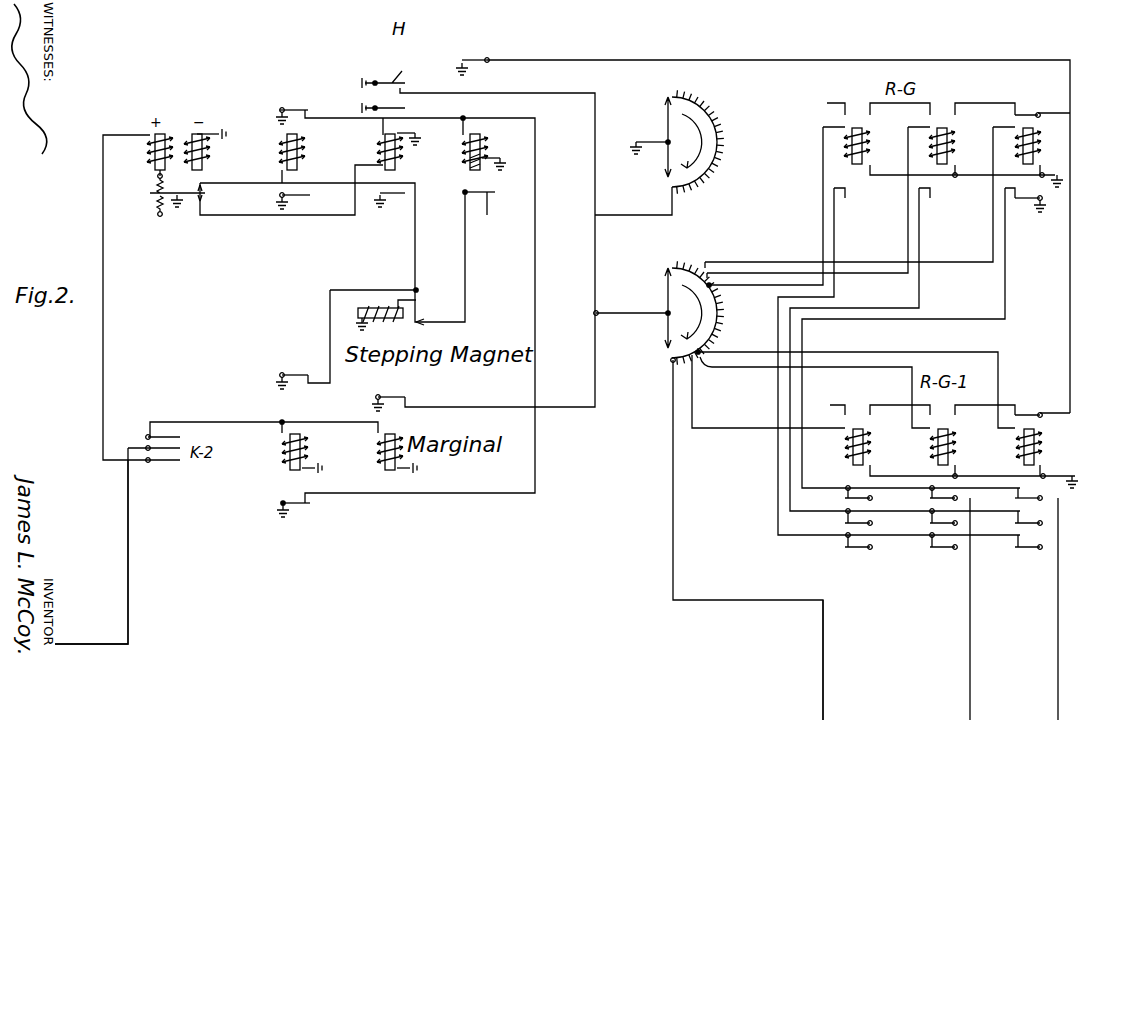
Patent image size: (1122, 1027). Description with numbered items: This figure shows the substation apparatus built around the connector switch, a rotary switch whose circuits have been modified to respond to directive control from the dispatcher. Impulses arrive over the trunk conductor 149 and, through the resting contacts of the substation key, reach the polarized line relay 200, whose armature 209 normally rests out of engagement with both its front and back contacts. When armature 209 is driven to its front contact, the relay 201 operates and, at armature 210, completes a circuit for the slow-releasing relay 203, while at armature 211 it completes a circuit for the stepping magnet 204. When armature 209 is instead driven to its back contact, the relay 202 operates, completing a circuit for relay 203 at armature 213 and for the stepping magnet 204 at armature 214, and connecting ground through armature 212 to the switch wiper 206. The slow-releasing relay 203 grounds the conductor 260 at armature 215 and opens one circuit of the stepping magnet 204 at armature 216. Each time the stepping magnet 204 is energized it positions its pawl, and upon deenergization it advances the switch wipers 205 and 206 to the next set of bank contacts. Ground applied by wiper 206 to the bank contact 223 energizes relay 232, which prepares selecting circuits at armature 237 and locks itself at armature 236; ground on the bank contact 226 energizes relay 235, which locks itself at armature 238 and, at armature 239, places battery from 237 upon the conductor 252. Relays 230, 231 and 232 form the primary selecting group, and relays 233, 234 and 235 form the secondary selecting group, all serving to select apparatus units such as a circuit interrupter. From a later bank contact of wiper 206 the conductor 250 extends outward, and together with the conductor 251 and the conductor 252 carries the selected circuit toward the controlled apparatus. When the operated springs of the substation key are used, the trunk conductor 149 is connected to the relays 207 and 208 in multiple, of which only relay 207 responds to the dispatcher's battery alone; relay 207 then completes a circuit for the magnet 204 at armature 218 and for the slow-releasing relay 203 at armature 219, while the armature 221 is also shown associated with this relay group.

The trunk conductor 149 is at (91, 552).
The polarized line relay 200 is at (168, 132).
The relay 201 is at (281, 150).
The relay 202 is at (380, 147).
The slow-releasing relay 203 is at (470, 152).
The stepping magnet 204 is at (384, 306).
The switch wiper 205 is at (667, 128).
The switch wiper 206 is at (666, 296).
The relay 207 is at (283, 454).
The relay 208 is at (378, 455).
The armature 209 is at (192, 205).
The armature 210 is at (294, 109).
The armature 211 is at (296, 196).
The armature 212 is at (383, 71).
The armature 213 is at (385, 107).
The armature 214 is at (393, 198).
The armature 215 is at (476, 52).
The armature 216 is at (476, 190).
The armature 218 is at (292, 362).
The armature 219 is at (284, 500).
The contact 221 is at (379, 397).
The bank contact 223 is at (703, 277).
The bank contact 226 is at (704, 349).
The relay 230 is at (846, 146).
The relay 231 is at (931, 146).
The relay 232 is at (1017, 146).
The relay 233 is at (847, 448).
The relay 234 is at (932, 448).
The relay 235 is at (1018, 448).
The armature 236 is at (1029, 113).
The armature 237 is at (1031, 201).
The armature 238 is at (1029, 413).
The armature 239 is at (1041, 500).
The conductor 250 is at (823, 700).
The conductor 251 is at (970, 700).
The conductor 252 is at (1058, 700).
The conductor 260 is at (795, 52).